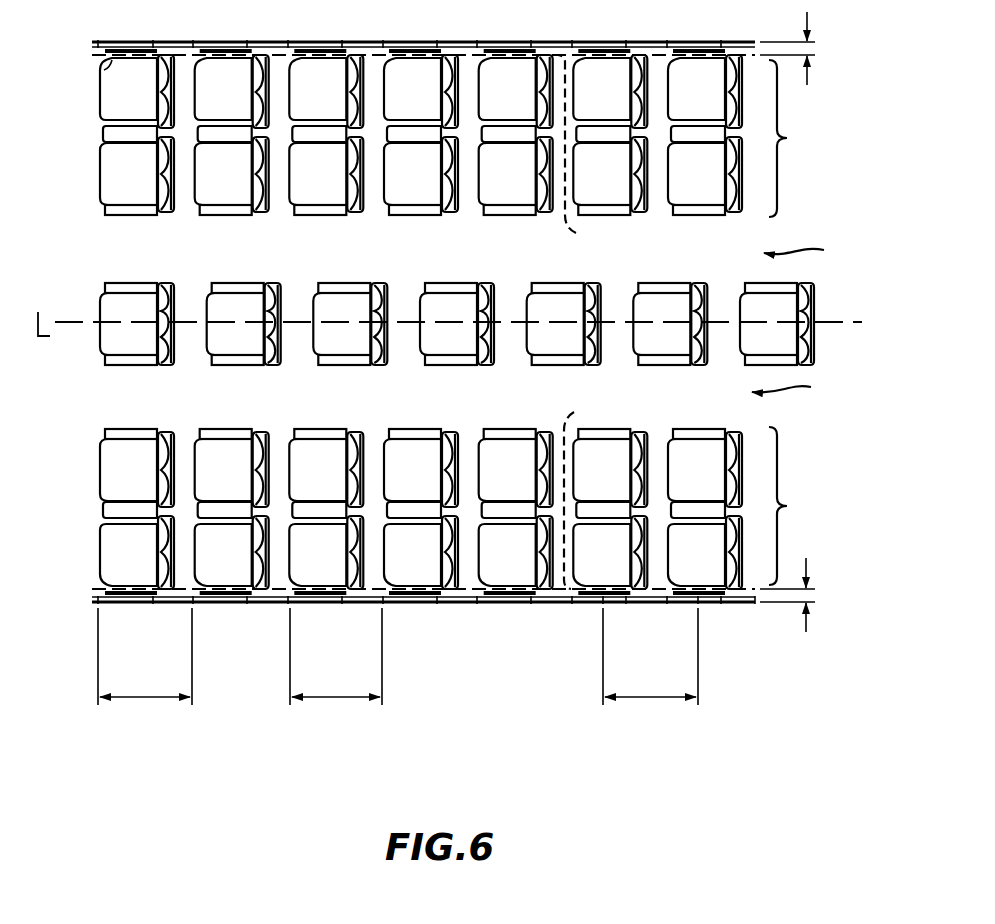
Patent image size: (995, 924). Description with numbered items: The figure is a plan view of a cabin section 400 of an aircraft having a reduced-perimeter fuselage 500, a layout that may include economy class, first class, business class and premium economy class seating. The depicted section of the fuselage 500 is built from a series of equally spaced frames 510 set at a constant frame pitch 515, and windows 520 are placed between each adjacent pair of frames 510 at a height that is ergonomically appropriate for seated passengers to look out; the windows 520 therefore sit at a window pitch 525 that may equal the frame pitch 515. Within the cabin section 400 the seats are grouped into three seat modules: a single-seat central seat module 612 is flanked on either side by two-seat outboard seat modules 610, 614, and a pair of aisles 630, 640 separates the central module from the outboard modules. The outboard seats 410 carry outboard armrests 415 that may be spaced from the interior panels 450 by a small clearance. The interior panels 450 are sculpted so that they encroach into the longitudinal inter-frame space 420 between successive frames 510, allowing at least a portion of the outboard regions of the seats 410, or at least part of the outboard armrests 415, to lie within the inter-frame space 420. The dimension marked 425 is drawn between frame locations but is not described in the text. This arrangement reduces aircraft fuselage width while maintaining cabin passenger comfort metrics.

The cabin section 400 is at (76, 248).
The outboard seat 410 is at (140, 100).
The outboard armrest 415 is at (104, 72).
The longitudinal inter-frame space 420 is at (812, 47).
The seat pitch 425 is at (338, 700).
The interior panel 450 is at (578, 234).
The fuselage 500 is at (735, 606).
The frame 510 is at (96, 608).
The frame pitch 515 is at (147, 700).
The window 520 is at (147, 608).
The window pitch 525 is at (653, 700).
The outboard seat module 610 is at (461, 317).
The single-seat central seat module 612 is at (828, 305).
The outboard seat module 614 is at (799, 506).
The aisle 630 is at (812, 254).
The aisle 640 is at (800, 389).